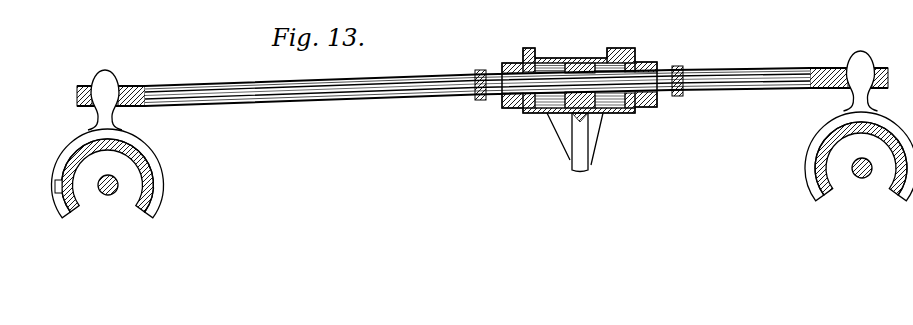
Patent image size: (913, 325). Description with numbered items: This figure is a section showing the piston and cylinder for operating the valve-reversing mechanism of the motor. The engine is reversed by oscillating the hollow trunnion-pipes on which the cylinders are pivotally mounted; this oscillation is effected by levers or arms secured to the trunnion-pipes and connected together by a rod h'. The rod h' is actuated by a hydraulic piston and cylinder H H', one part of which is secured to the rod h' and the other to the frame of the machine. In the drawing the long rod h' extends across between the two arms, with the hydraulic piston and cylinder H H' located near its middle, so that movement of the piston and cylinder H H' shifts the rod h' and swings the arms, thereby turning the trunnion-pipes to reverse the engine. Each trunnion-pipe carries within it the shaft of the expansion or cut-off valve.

The rod h' is at (482, 97).
The hydraulic piston H is at (579, 99).
The hydraulic cylinder H' is at (575, 67).